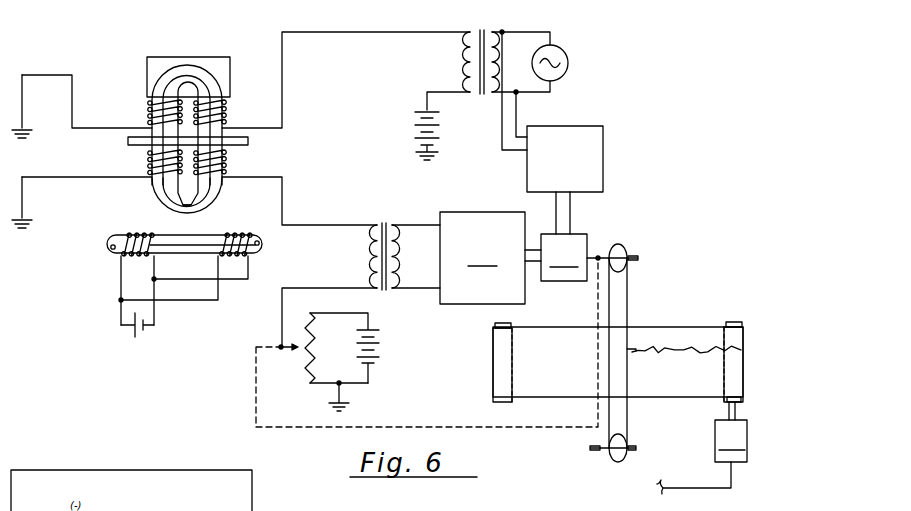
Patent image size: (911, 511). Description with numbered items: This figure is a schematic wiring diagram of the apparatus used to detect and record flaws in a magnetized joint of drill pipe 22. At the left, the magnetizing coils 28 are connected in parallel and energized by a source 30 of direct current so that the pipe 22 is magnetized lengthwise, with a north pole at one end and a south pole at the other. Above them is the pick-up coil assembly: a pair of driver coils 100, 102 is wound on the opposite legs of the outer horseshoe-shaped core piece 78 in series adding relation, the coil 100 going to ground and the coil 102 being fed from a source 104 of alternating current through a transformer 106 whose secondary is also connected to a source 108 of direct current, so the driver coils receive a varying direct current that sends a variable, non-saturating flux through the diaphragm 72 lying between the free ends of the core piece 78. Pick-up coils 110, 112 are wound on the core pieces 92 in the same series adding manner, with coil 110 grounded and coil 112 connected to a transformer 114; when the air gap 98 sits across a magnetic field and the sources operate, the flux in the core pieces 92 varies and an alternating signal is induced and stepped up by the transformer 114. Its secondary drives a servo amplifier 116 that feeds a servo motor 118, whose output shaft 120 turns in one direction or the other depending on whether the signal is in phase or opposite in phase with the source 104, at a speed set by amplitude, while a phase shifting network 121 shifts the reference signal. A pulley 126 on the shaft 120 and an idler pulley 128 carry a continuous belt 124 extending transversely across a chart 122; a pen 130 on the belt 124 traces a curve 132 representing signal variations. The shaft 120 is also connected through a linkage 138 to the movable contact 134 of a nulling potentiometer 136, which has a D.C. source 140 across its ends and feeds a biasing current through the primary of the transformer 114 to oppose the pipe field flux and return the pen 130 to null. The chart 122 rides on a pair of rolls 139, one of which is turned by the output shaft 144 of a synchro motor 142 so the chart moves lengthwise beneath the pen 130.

The drill pipe 22 is at (171, 246).
The magnetizing coils 28 is at (130, 232).
The source of direct current energy 30 is at (133, 332).
The diaphragm 72 is at (249, 141).
The outer horseshoe-shaped core piece 78 is at (190, 77).
The core pieces 92 is at (160, 185).
The air gap 98 is at (186, 210).
The driver coil 100 is at (152, 107).
The driver coil 102 is at (222, 115).
The source of alternating current energy 104 is at (560, 53).
The transformer 106 is at (480, 28).
The source of direct current energy 108 is at (411, 130).
The pick-up coil 110 is at (152, 162).
The pick-up coil 112 is at (222, 168).
The transformer 114 is at (385, 220).
The servo amplifier 116 is at (482, 258).
The servo motor 118 is at (564, 257).
The output shaft 120 is at (639, 256).
The phase shifting network 121 is at (603, 170).
The chart 122 is at (646, 338).
The continuous belt 124 is at (628, 292).
The pulley 126 is at (620, 246).
The idler pulley 128 is at (617, 459).
The pen 130 is at (631, 353).
The curve 132 is at (672, 352).
The movable contact 134 is at (297, 350).
The potentiometer 136 is at (310, 382).
The linkage 138 is at (384, 427).
The rolls 139 is at (500, 323).
The D.C. source 140 is at (380, 349).
The synchro motor 142 is at (731, 441).
The output shaft 144 is at (728, 410).